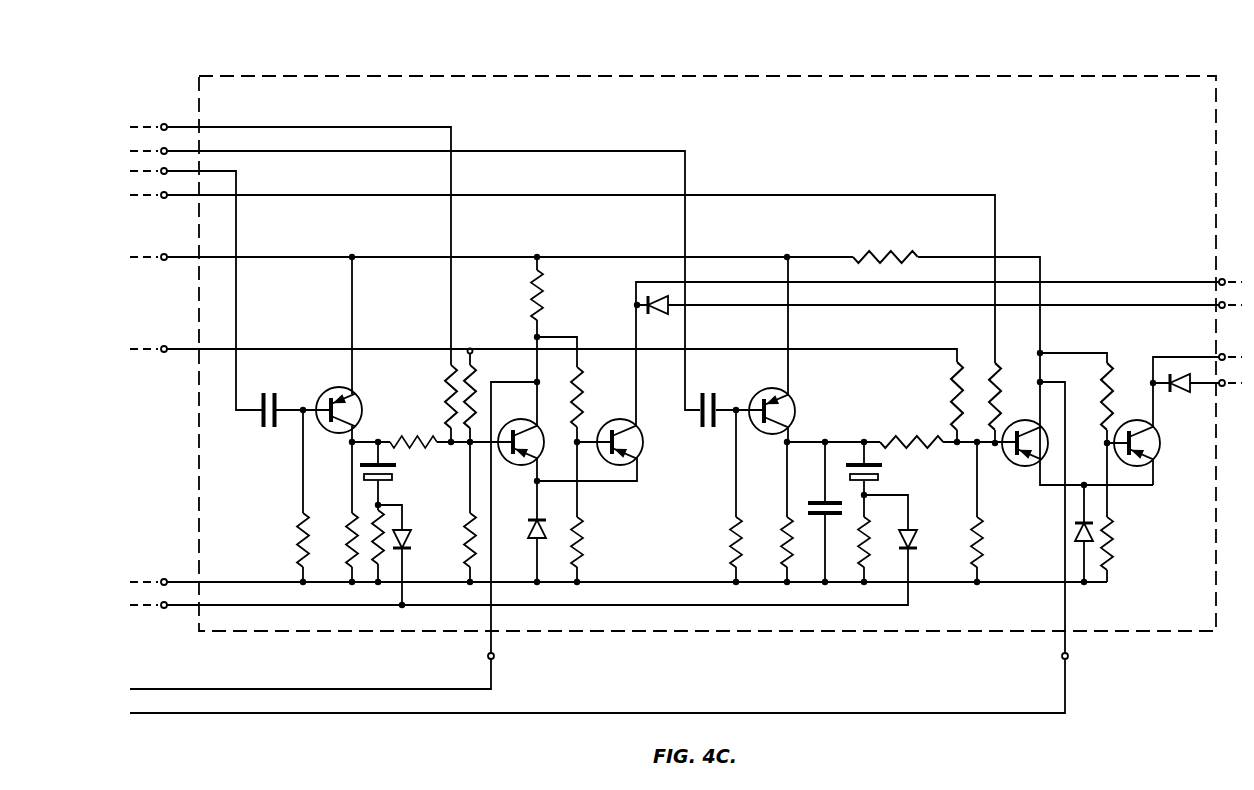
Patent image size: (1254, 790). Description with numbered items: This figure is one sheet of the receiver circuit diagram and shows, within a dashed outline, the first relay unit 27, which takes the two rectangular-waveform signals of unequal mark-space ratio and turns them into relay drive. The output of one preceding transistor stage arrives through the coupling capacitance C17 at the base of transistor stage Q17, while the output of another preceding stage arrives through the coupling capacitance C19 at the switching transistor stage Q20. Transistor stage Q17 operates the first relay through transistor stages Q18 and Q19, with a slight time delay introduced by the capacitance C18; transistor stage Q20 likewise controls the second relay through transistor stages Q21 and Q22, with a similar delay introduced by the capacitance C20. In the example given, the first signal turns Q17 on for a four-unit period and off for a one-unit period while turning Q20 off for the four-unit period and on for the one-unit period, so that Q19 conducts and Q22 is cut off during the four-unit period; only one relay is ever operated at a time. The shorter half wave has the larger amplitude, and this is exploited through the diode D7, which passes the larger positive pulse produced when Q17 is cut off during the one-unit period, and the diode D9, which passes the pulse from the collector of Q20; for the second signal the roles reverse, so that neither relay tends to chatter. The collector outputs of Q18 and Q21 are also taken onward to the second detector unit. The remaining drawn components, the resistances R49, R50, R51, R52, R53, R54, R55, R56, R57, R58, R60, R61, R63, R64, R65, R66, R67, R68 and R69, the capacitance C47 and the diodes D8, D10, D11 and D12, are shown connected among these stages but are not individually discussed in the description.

The first relay unit 27 is at (282, 73).
The coupling capacitance C17 is at (270, 392).
The transistor stage Q17 is at (331, 395).
The resistor R49 is at (302, 515).
The resistor R50 is at (346, 555).
The resistor R51 is at (368, 557).
The resistor R52 is at (420, 440).
The resistor R53 is at (452, 368).
The resistor R54 is at (469, 349).
The resistor R55 is at (467, 560).
The capacitance C18 is at (390, 483).
The diode D7 is at (416, 554).
The transistor stage Q18 is at (517, 466).
The diode D8 is at (533, 526).
The resistor R56 is at (531, 300).
The resistor R57 is at (581, 365).
The resistor R58 is at (582, 550).
The transistor stage Q19 is at (642, 455).
The diode D11 is at (669, 322).
The coupling capacitance C19 is at (705, 394).
The switching transistor stage Q20 is at (790, 401).
The resistor R60 is at (733, 520).
The resistor R61 is at (785, 556).
The capacitor C47 is at (813, 512).
The capacitance C20 is at (850, 463).
The resistor R63 is at (881, 440).
The resistor R69 is at (866, 563).
The diode D9 is at (912, 542).
The resistor R66 is at (867, 251).
The resistor R64 is at (993, 365).
The resistor R65 is at (972, 551).
The transistor stage Q21 is at (1010, 461).
The resistor R67 is at (1116, 365).
The diode D10 is at (1075, 536).
The resistor R68 is at (1110, 561).
The transistor stage Q22 is at (1151, 457).
The diode D12 is at (1187, 377).